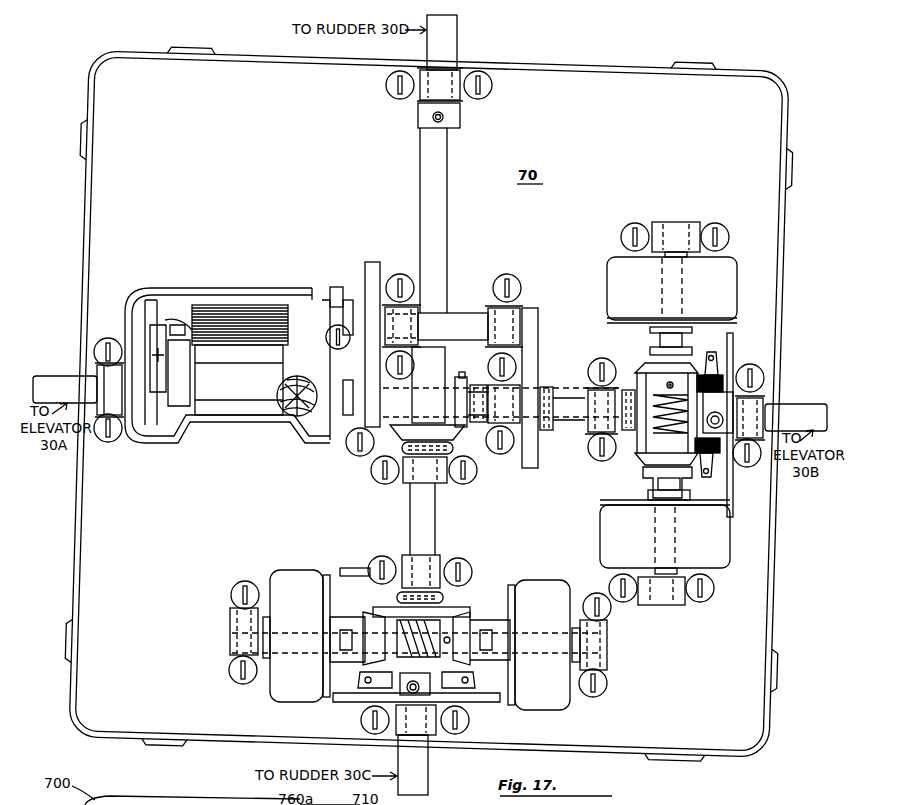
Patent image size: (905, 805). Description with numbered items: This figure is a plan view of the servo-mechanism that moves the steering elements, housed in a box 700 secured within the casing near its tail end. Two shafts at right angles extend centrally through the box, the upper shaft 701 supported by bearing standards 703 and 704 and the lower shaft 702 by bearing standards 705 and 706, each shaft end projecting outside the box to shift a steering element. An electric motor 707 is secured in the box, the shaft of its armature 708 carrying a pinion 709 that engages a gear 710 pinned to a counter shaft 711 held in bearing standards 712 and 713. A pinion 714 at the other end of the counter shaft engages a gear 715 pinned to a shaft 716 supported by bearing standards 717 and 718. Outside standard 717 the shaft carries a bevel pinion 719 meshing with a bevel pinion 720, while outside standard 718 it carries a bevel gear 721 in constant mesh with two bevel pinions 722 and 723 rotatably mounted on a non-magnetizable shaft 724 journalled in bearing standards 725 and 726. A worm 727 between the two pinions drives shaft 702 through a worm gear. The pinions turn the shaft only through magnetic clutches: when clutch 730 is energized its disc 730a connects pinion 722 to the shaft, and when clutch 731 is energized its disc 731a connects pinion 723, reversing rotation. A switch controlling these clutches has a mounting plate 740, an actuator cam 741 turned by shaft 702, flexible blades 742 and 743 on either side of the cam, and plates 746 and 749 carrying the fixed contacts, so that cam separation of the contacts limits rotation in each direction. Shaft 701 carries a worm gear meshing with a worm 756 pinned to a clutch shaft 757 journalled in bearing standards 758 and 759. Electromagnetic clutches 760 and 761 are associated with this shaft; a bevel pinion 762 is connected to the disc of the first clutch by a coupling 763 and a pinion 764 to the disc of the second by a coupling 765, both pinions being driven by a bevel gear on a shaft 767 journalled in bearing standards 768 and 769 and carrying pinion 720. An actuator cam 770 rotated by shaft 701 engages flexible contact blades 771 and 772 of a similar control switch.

The box 700 is at (91, 196).
The shaft 701 is at (445, 48).
The shaft 702 is at (48, 385).
The bearing standard 703 is at (410, 722).
The bearing standard 704 is at (445, 90).
The bearing standard 705 is at (102, 375).
The bearing standard 706 is at (762, 425).
The electric motor 707 is at (248, 444).
The armature 708 is at (230, 358).
The pinion 709 is at (372, 420).
The gear 710 is at (372, 282).
The counter shaft 711 is at (452, 326).
The bearing standard 712 is at (398, 320).
The bearing standard 713 is at (506, 320).
The pinion 714 is at (530, 325).
The gear 715 is at (528, 385).
The shaft 716 is at (565, 400).
The bearing standard 717 is at (504, 410).
The bearing standard 718 is at (596, 420).
The bevel pinion 719 is at (461, 378).
The bevel pinion 720 is at (412, 432).
The bevel gear 721 is at (630, 385).
The bevel pinion 722 is at (655, 368).
The bevel pinion 723 is at (662, 478).
The shaft 724 is at (672, 278).
The bearing standard 725 is at (677, 232).
The bearing standard 726 is at (660, 597).
The worm 727 is at (668, 440).
The clutch mechanism 730 is at (724, 270).
The disc 730a is at (615, 322).
The clutch mechanism 731 is at (718, 552).
The disc 731a is at (610, 512).
The mounting plate 740 is at (728, 505).
The actuator cam 741 is at (730, 400).
The flexible blade 742 is at (710, 470).
The flexible blade 743 is at (711, 350).
The rigid plate 746 is at (720, 452).
The plate 749 is at (720, 383).
The worm 756 is at (415, 677).
The clutch shaft 757 is at (290, 630).
The bearing standard 758 is at (232, 648).
The bearing standard 759 is at (608, 667).
The electromagnetic clutch 760 is at (277, 572).
The electromagnetic clutch 761 is at (552, 690).
The bevel pinion 762 is at (378, 625).
The coupling 763 is at (352, 615).
The bevel pinion 764 is at (478, 622).
The coupling 765 is at (450, 622).
The shaft 767 is at (433, 528).
The bearing standard 768 is at (447, 487).
The bearing standard 769 is at (400, 560).
The actuator cam 770 is at (455, 722).
The flexible contact blade 771 is at (360, 676).
The flexible contact blade 772 is at (462, 678).